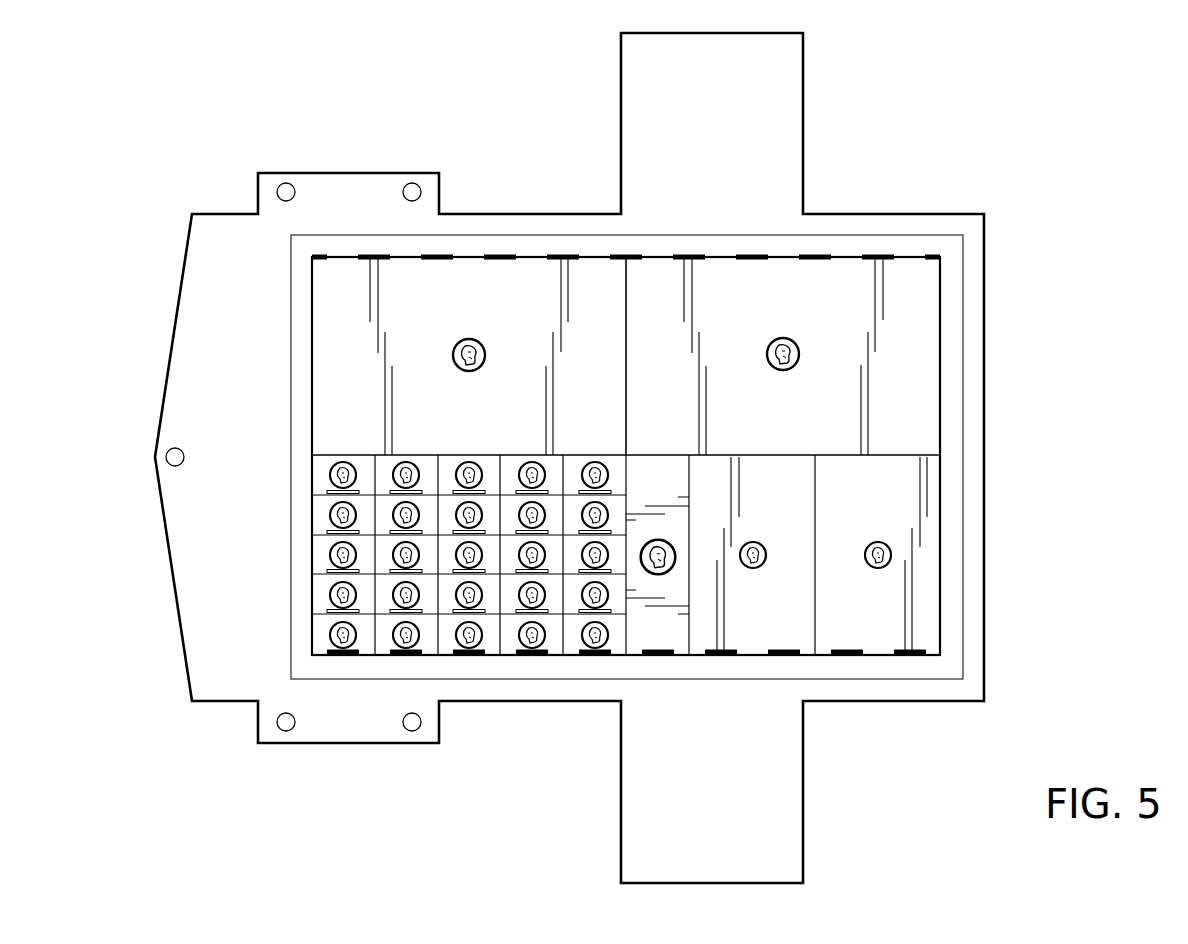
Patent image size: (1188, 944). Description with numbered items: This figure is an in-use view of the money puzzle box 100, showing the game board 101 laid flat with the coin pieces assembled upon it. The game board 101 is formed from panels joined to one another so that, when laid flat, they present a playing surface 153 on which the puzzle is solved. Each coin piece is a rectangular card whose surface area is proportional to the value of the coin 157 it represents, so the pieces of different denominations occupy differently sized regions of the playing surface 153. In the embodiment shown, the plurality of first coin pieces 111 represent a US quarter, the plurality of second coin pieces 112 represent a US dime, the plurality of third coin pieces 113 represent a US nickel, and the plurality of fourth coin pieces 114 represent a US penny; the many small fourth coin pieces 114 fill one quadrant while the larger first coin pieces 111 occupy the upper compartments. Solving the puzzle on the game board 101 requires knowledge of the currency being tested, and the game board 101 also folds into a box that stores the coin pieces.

The money puzzle box 100 is at (558, 458).
The game board 101 is at (523, 213).
The plurality of first coin pieces 111 is at (626, 285).
The plurality of second coin pieces 112 is at (790, 627).
The plurality of third coin pieces 113 is at (675, 630).
The plurality of fourth coin pieces 114 is at (543, 633).
The playing surface 153 is at (378, 240).
The coin 157 is at (798, 343).